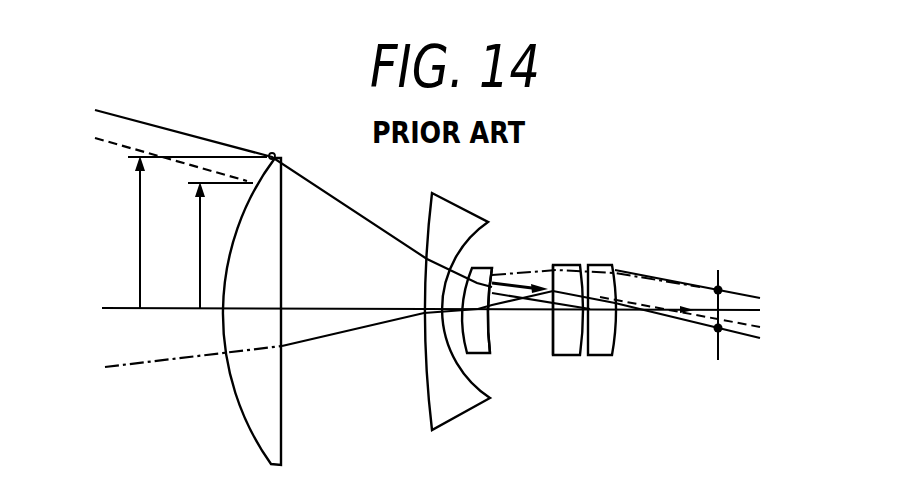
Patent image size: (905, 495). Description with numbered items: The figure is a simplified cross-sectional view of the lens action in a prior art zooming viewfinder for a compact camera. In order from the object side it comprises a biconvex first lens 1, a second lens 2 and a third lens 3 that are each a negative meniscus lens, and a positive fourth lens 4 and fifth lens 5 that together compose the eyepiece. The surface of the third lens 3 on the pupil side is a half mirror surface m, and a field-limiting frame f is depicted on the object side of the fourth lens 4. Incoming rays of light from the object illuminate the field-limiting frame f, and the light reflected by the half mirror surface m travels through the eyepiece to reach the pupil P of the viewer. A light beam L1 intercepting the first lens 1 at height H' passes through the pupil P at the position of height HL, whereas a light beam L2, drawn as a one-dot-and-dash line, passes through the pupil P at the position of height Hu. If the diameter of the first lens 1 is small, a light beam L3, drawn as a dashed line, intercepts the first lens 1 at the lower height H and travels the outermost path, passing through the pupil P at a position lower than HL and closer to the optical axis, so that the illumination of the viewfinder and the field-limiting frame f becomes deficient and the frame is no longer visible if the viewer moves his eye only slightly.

The first lens 1 is at (275, 425).
The second lens 2 is at (458, 408).
The third lens 3 is at (482, 355).
The fourth lens 4 is at (562, 357).
The fifth lens 5 is at (603, 357).
The half mirror surface m is at (490, 343).
The field-limiting frame f is at (552, 353).
The pupil P is at (718, 343).
The height HU Hu is at (720, 288).
The height HL is at (720, 330).
The height H is at (216, 245).
The height H' is at (187, 232).
The light beam L1 is at (190, 135).
The light beam L2 is at (175, 362).
The light beam L3 is at (123, 146).